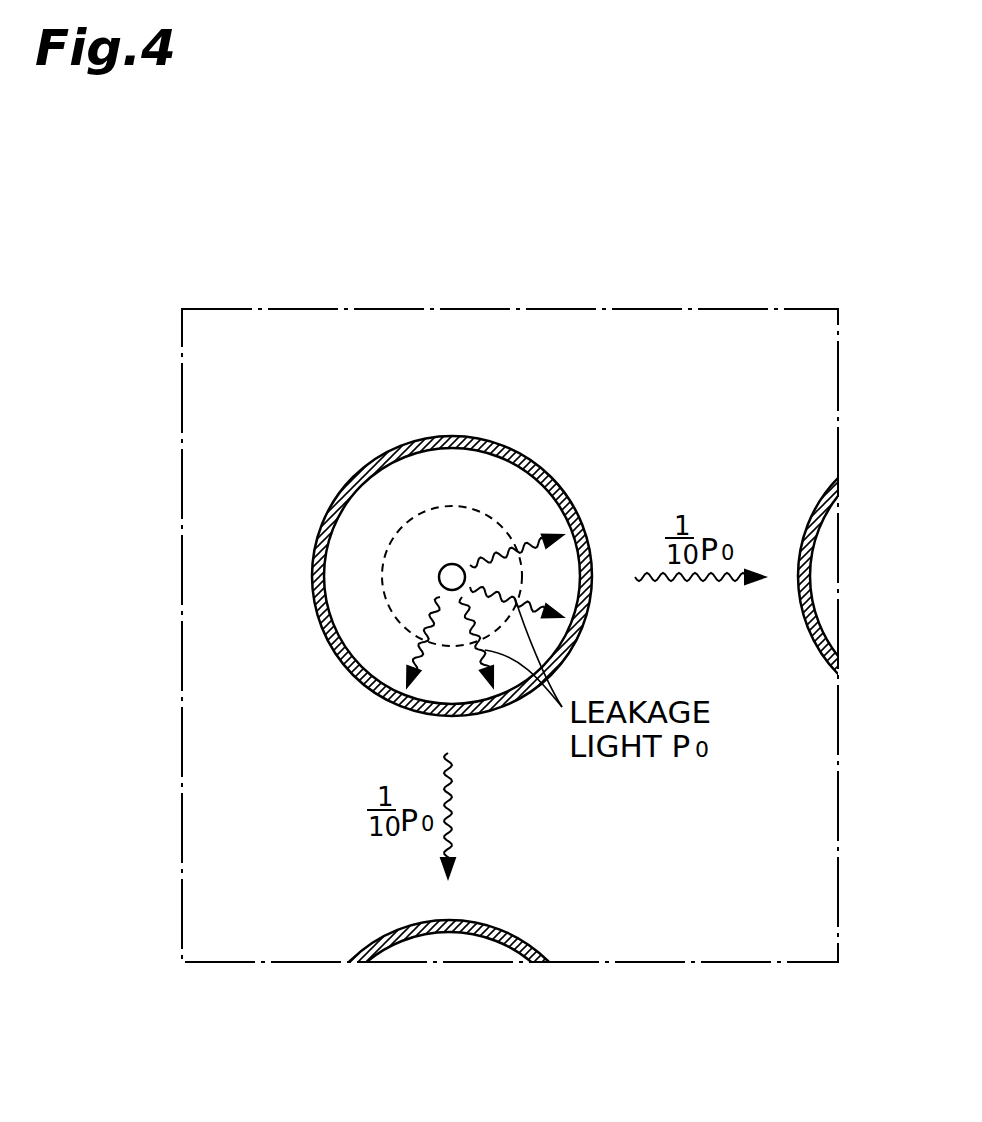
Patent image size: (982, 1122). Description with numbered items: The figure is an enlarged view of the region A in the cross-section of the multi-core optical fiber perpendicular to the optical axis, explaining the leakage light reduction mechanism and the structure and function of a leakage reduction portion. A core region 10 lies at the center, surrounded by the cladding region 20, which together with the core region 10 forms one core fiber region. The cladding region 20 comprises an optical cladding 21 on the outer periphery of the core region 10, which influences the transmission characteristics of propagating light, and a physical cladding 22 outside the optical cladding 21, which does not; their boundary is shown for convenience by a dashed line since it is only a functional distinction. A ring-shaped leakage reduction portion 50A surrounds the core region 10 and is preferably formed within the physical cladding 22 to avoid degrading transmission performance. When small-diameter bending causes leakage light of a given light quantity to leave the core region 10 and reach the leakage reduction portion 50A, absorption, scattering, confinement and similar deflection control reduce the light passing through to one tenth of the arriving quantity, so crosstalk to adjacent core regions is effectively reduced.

The core region 10 is at (458, 565).
The cladding region 20 is at (320, 576).
The optical cladding 21 is at (408, 592).
The physical cladding 22 is at (357, 555).
The leakage reduction portion 50A is at (545, 492).
The region A is at (838, 375).